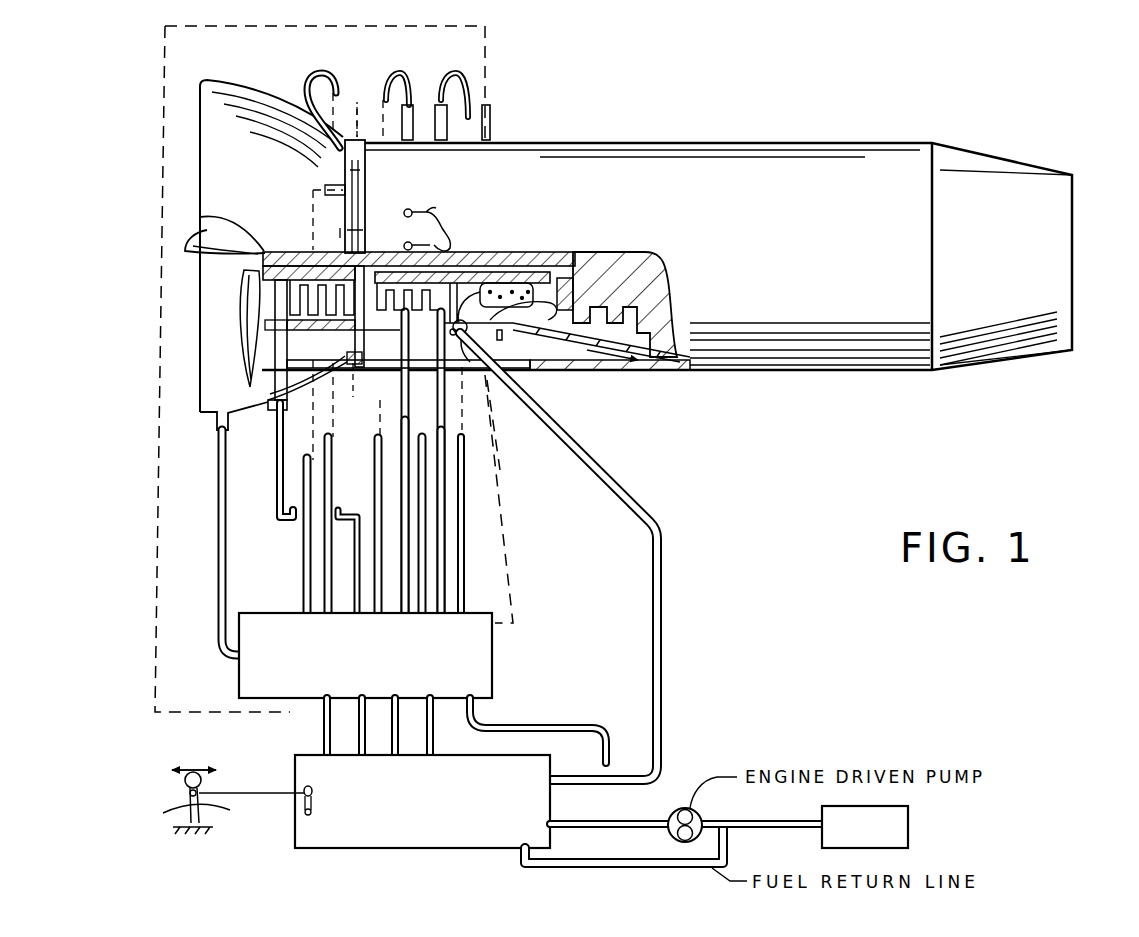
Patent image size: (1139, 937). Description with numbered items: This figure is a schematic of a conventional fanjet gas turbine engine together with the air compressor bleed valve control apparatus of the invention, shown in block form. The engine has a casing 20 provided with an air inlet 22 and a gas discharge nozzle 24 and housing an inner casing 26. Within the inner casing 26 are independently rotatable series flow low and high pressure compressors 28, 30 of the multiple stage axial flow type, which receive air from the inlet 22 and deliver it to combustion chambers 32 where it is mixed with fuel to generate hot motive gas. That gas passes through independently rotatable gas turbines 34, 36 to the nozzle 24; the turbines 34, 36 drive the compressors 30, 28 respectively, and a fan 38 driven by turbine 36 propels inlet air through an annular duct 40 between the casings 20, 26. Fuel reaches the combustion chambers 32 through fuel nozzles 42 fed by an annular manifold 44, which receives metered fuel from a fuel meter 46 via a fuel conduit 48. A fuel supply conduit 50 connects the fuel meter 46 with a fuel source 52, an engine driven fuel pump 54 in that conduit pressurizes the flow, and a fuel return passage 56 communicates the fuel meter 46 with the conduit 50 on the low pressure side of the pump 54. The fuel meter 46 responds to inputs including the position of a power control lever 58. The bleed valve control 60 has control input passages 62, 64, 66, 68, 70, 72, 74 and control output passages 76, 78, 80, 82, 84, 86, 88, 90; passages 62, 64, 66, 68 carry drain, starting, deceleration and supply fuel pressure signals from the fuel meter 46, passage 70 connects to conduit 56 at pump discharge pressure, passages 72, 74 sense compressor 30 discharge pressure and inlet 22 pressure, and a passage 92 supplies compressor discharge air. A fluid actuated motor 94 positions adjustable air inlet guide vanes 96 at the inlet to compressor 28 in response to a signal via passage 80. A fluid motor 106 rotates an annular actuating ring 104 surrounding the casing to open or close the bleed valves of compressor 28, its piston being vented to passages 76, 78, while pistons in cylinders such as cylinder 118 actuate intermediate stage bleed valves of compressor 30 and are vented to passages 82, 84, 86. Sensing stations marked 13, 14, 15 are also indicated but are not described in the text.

The pressure sensing station 13 is at (376, 101).
The pressure sensing station 14 is at (429, 58).
The pressure sensing station 15 is at (463, 68).
The casing 20 is at (877, 372).
The air inlet 22 is at (218, 170).
The gas discharge nozzle 24 is at (1063, 293).
The inner casing 26 is at (352, 312).
The low pressure compressor 28 is at (325, 318).
The high pressure compressor 30 is at (378, 302).
The combustion chambers 32 is at (510, 290).
The gas turbine 34 is at (563, 277).
The gas turbine 36 is at (630, 277).
The fan 38 is at (270, 328).
The annular duct 40 is at (553, 353).
The fuel nozzles 42 is at (483, 290).
The annular manifold 44 is at (463, 365).
The fuel meter 46 is at (424, 839).
The fuel conduit 48 is at (665, 655).
The fuel supply conduit 50 is at (712, 822).
The fuel source 52 is at (908, 812).
The engine driven fuel pump 54 is at (688, 808).
The fuel return passage 56 is at (607, 868).
The power control lever 58 is at (188, 786).
The bleed valve control 60 is at (478, 691).
The control input passage 62 is at (323, 733).
The control input passage 64 is at (358, 716).
The control input passage 66 is at (392, 716).
The control input passage 68 is at (426, 716).
The control input passage 70 is at (464, 720).
The control input passage 72 is at (158, 650).
The control input passage 74 is at (218, 570).
The control output passage 76 is at (305, 560).
The control output passage 78 is at (323, 592).
The control output passage 80 is at (276, 483).
The control output passage 82 is at (372, 463).
The control output passage 84 is at (397, 488).
The control output passage 86 is at (430, 485).
The control output passage 88 is at (445, 513).
The control output passage 90 is at (460, 540).
The passage 92 is at (512, 520).
The fluid actuated motor 94 is at (283, 386).
The adjustable air inlet guide vanes 96 is at (275, 300).
The annular actuating ring 104 is at (365, 153).
The fluid motor 106 is at (368, 183).
The cylinder 118 is at (437, 211).